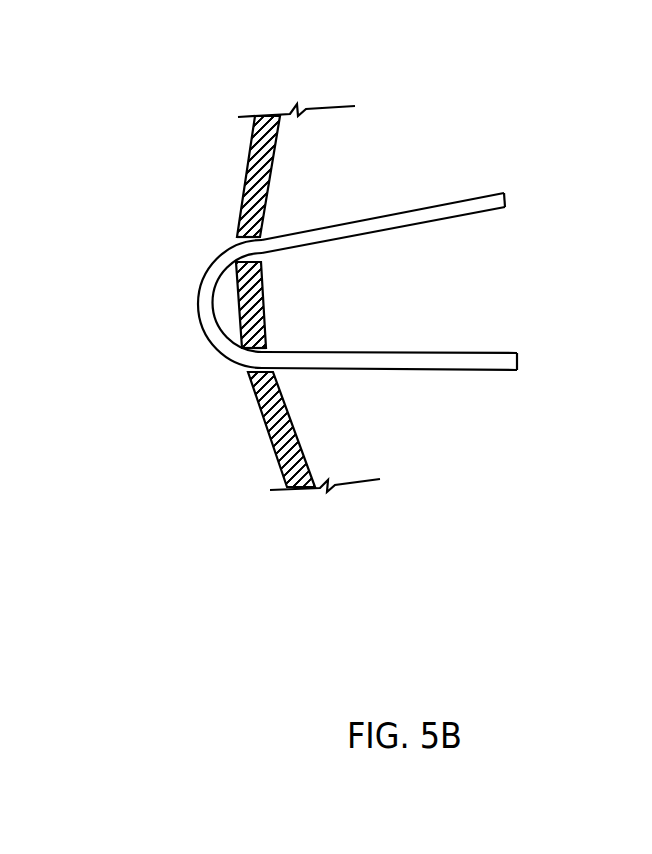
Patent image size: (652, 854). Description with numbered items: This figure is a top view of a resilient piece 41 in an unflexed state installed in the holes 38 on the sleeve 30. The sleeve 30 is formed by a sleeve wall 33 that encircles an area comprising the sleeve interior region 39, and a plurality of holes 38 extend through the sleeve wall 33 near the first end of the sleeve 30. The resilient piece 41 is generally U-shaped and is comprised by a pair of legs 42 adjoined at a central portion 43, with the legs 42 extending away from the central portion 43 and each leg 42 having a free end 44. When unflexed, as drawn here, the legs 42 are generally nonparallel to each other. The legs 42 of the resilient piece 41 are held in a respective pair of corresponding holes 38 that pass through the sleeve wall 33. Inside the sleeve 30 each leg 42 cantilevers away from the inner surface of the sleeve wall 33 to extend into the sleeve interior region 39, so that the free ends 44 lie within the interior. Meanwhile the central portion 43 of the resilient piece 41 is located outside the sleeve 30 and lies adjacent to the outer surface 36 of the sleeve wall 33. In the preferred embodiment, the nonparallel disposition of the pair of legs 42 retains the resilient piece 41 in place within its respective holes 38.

The sleeve 30 is at (243, 163).
The sleeve wall 33 is at (260, 417).
The outer surface 36 is at (240, 317).
The holes 38 is at (237, 240).
The sleeve interior region 39 is at (470, 290).
The resilient piece 41 is at (200, 278).
The legs 42 is at (413, 210).
The central portion 43 is at (206, 300).
The free end 44 is at (505, 197).